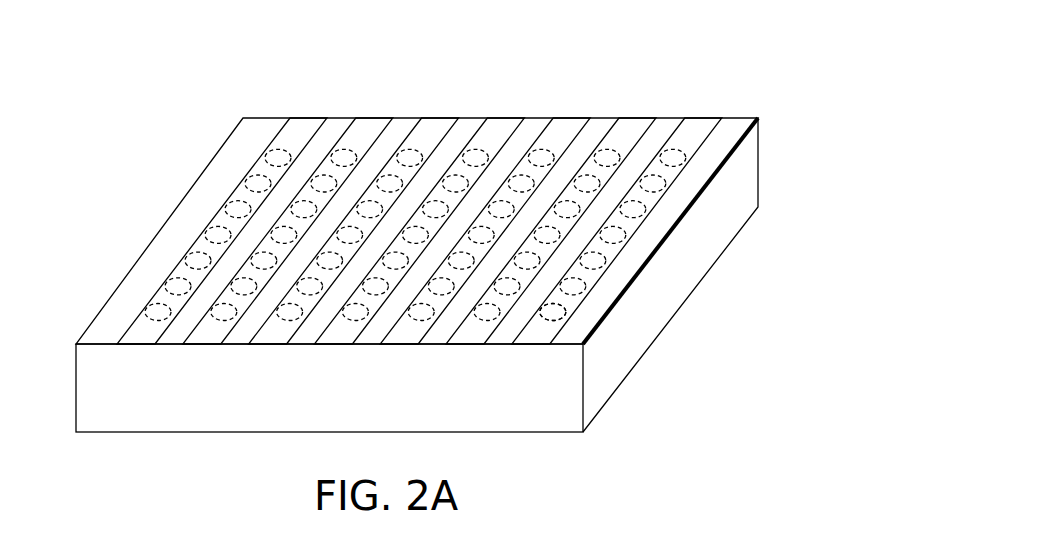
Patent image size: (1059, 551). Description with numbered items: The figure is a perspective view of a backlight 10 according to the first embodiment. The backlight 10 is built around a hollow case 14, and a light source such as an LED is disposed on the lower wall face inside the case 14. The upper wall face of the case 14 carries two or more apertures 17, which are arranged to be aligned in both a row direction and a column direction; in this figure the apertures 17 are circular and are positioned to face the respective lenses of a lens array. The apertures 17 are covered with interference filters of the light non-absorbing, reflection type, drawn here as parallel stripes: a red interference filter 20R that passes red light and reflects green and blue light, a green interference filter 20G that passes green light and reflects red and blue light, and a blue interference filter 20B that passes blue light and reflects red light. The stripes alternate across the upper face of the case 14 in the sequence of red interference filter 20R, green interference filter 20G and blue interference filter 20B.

The backlight 10 is at (391, 255).
The case 14 is at (210, 415).
The apertures 17 is at (560, 314).
The red interference filter 20R is at (438, 179).
The green interference filter 20G is at (404, 179).
The blue interference filter 20B is at (470, 179).